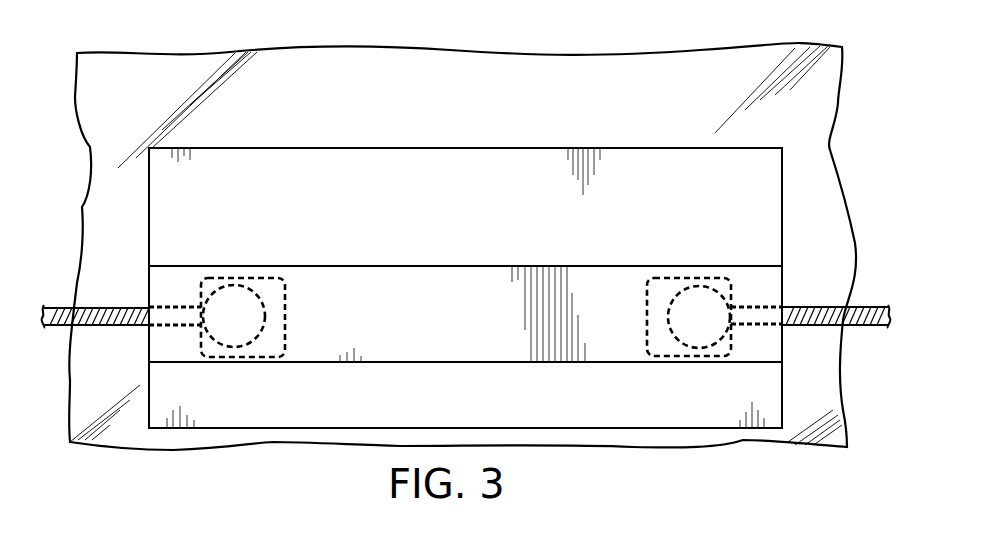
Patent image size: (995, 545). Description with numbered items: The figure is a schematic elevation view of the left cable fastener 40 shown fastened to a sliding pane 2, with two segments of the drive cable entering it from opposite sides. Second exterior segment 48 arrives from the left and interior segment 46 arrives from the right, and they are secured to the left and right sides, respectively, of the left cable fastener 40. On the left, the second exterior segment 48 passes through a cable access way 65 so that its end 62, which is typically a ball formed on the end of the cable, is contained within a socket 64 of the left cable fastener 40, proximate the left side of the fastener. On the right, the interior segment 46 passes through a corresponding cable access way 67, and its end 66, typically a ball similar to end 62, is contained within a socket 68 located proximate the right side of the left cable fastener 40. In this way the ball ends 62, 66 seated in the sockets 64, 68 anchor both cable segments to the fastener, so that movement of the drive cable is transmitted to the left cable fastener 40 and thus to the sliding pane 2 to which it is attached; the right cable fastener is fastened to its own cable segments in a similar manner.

The panel / wall 2 is at (827, 103).
The left cable fastener 40 is at (407, 270).
The interior segment 46 is at (875, 326).
The second exterior segment 48 is at (110, 306).
The end 62 is at (233, 350).
The socket 64 is at (260, 277).
The cable access way 65 is at (173, 304).
The end 66 is at (668, 317).
The cable access way 67 is at (763, 304).
The socket 68 is at (677, 276).